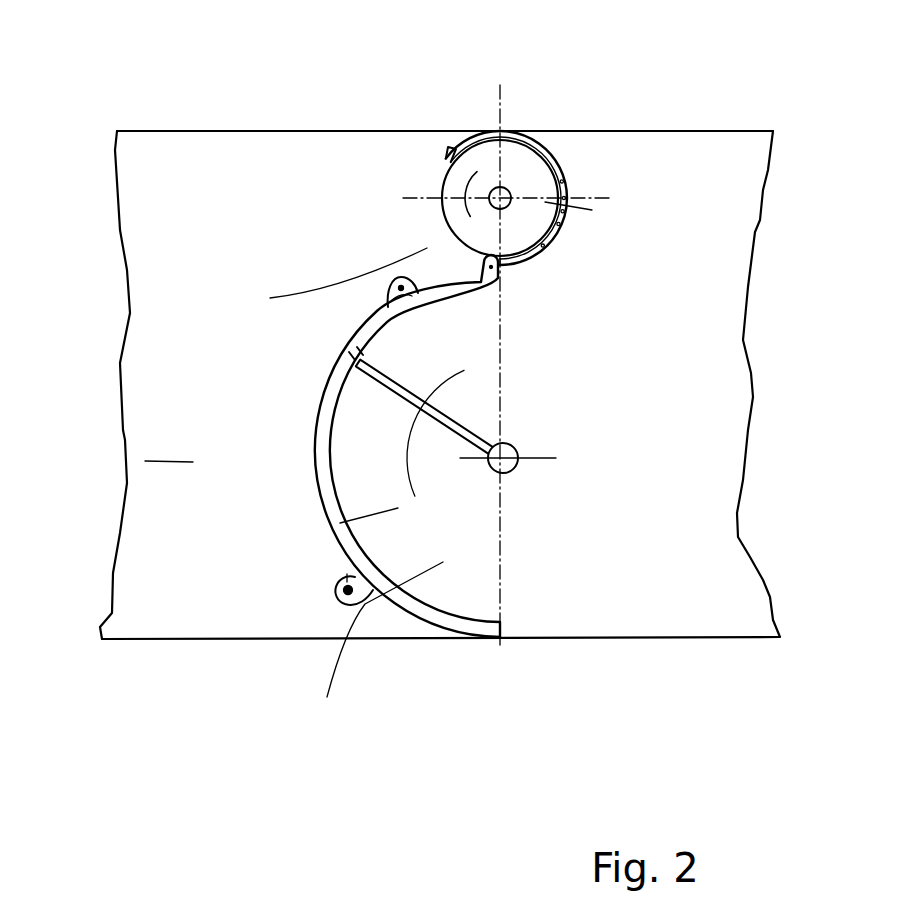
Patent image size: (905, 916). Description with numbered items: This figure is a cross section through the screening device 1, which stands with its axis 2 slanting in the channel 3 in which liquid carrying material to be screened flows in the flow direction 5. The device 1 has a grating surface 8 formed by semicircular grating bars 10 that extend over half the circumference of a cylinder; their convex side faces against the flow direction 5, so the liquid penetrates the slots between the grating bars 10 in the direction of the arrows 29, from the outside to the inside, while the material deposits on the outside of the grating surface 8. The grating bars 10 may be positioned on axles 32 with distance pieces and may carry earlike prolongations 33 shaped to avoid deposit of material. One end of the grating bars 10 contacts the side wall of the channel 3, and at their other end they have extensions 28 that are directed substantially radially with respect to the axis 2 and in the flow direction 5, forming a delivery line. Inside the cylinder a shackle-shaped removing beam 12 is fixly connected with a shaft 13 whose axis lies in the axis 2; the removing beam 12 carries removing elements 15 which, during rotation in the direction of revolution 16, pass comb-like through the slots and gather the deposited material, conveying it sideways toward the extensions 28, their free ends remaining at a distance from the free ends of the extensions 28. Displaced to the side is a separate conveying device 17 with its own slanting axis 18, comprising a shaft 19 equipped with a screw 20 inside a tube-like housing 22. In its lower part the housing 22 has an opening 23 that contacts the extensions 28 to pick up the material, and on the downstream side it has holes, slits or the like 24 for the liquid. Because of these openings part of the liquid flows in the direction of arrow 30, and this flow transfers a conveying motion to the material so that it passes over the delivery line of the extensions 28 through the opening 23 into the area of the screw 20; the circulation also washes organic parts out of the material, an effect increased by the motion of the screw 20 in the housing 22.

The device 1 is at (648, 398).
The axis 2 is at (503, 472).
The channel 3 is at (175, 168).
The flow direction 5 is at (157, 462).
The grating surface 8 is at (318, 478).
The grating bars 10 is at (350, 327).
The removing beam 12 is at (467, 432).
The shaft 13 is at (510, 468).
The removing elements 15 is at (345, 345).
The direction of revolution 16 is at (407, 430).
The conveying device 17 is at (498, 85).
The axis 18 is at (505, 188).
The shaft 19 is at (532, 173).
The screw 20 is at (563, 170).
The housing 22 is at (474, 133).
The opening 23 is at (440, 178).
The holes, slits or the like 24 is at (575, 188).
The extensions 28 is at (500, 265).
The arrows 29 is at (350, 618).
The arrow 30 is at (541, 198).
The axles 32 is at (263, 308).
The earlike prolongations 33 is at (345, 573).